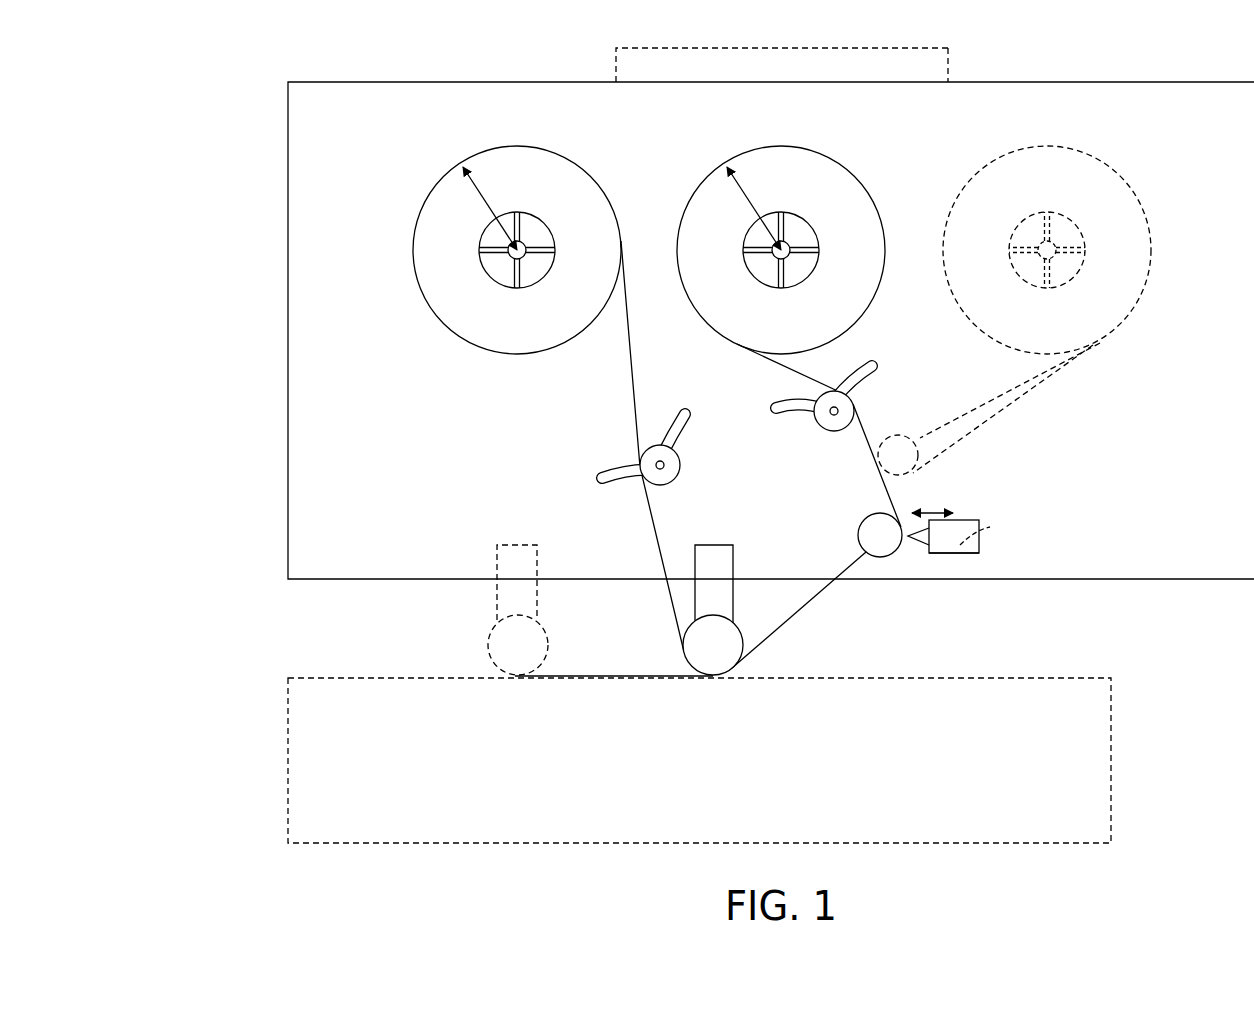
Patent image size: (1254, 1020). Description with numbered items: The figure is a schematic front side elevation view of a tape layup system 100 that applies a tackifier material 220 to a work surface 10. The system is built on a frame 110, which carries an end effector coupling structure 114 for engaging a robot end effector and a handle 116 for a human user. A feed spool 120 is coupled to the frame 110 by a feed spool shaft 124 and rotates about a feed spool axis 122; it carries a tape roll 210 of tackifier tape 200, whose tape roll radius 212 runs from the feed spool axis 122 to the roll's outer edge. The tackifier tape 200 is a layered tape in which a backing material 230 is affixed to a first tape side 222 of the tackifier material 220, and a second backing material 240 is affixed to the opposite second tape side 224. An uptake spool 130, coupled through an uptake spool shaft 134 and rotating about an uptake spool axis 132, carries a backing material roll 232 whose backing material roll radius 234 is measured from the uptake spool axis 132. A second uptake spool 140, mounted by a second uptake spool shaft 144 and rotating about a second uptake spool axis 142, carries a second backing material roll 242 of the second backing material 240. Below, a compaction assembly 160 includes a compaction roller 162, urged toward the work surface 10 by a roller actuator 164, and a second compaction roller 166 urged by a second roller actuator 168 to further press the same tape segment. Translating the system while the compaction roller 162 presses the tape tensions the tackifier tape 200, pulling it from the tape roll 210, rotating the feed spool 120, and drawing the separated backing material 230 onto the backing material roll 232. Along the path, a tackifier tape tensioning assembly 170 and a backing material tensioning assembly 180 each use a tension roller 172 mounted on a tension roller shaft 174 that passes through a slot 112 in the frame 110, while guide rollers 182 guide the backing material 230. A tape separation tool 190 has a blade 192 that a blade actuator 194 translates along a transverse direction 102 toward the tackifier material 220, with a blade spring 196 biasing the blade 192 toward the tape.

The tape layup system 100 is at (688, 305).
The frame 110 is at (318, 78).
The end effector coupling structure 114 is at (648, 48).
The handle 116 is at (917, 48).
The work surface 10 is at (315, 676).
The backing material roll 232 is at (517, 145).
The backing material roll radius 234 is at (480, 196).
The uptake spool 130 is at (448, 251).
The uptake spool axis 132 is at (546, 220).
The uptake spool shaft 134 is at (517, 306).
The tape roll 210 is at (781, 145).
The tape roll radius 212 is at (742, 196).
The feed spool 120 is at (832, 221).
The feed spool axis 122 is at (797, 263).
The feed spool shaft 124 is at (854, 239).
The second backing material roll 242 is at (1050, 145).
The second backing material 240 is at (1060, 378).
The second uptake spool 140 is at (1097, 221).
The second uptake spool axis 142 is at (1061, 263).
The second uptake spool shaft 144 is at (974, 278).
The backing material 230 is at (631, 378).
The tackifier material 220 is at (850, 594).
The first tape side 222 is at (620, 676).
The second tape side 224 is at (823, 606).
The compaction roller 162 is at (785, 620).
The backing material tensioning assembly 180 is at (734, 454).
The tackifier tape 200 is at (835, 370).
The tension roller shaft 174 is at (652, 445).
The slot 112 is at (690, 425).
The tension roller 172 is at (662, 487).
The tackifier tape tensioning assembly 170 is at (920, 375).
The guide roller 182 is at (862, 522).
The tape separation tool 190 is at (975, 520).
The blade 192 is at (910, 540).
The blade actuator 194 is at (962, 555).
The blade spring 196 is at (960, 545).
The transverse direction 102 is at (928, 513).
The compaction assembly 160 is at (472, 569).
The second roller actuator 168 is at (497, 600).
The second compaction roller 166 is at (490, 628).
The roller actuator 164 is at (735, 597).